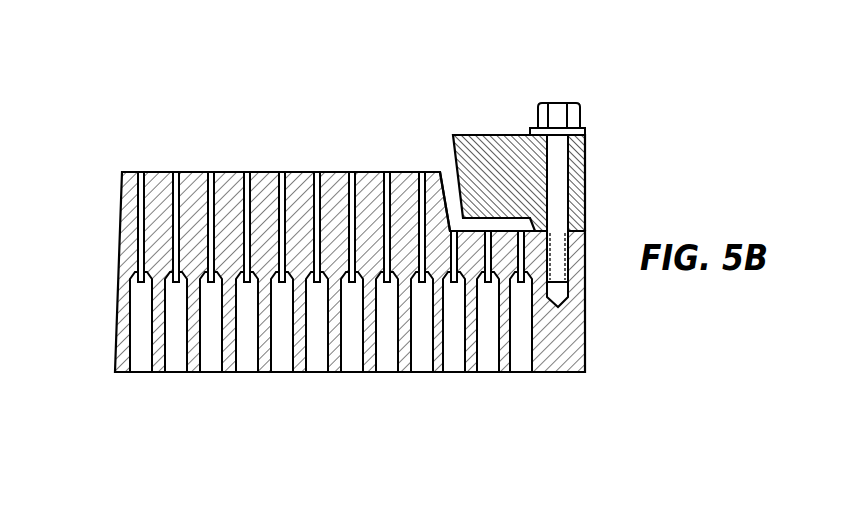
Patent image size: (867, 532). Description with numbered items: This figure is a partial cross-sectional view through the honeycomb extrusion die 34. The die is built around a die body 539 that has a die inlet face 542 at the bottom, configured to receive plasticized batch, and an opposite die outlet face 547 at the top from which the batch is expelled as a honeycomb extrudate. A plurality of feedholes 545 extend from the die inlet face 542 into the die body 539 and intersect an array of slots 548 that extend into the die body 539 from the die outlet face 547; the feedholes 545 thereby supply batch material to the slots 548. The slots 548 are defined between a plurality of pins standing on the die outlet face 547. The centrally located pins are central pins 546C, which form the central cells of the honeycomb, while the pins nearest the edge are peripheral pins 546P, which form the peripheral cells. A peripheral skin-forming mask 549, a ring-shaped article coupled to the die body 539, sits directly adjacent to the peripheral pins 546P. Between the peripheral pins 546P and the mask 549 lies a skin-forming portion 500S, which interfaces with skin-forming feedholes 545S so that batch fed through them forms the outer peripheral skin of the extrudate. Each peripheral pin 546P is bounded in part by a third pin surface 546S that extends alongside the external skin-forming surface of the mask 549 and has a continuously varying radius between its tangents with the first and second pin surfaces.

The honeycomb extrusion die 34 is at (108, 46).
The die inlet face 542 is at (193, 373).
The die body 539 is at (263, 153).
The central pins 546C is at (193, 172).
The die outlet face 547 is at (229, 172).
The slots 548 is at (317, 173).
The feedholes 545 is at (358, 356).
The peripheral pins 546P is at (432, 172).
The third pin surface 546S is at (507, 232).
The skin-forming feedholes 545S is at (453, 357).
The skin-forming portion 500S is at (474, 164).
The peripheral skin-forming mask 549 is at (502, 135).